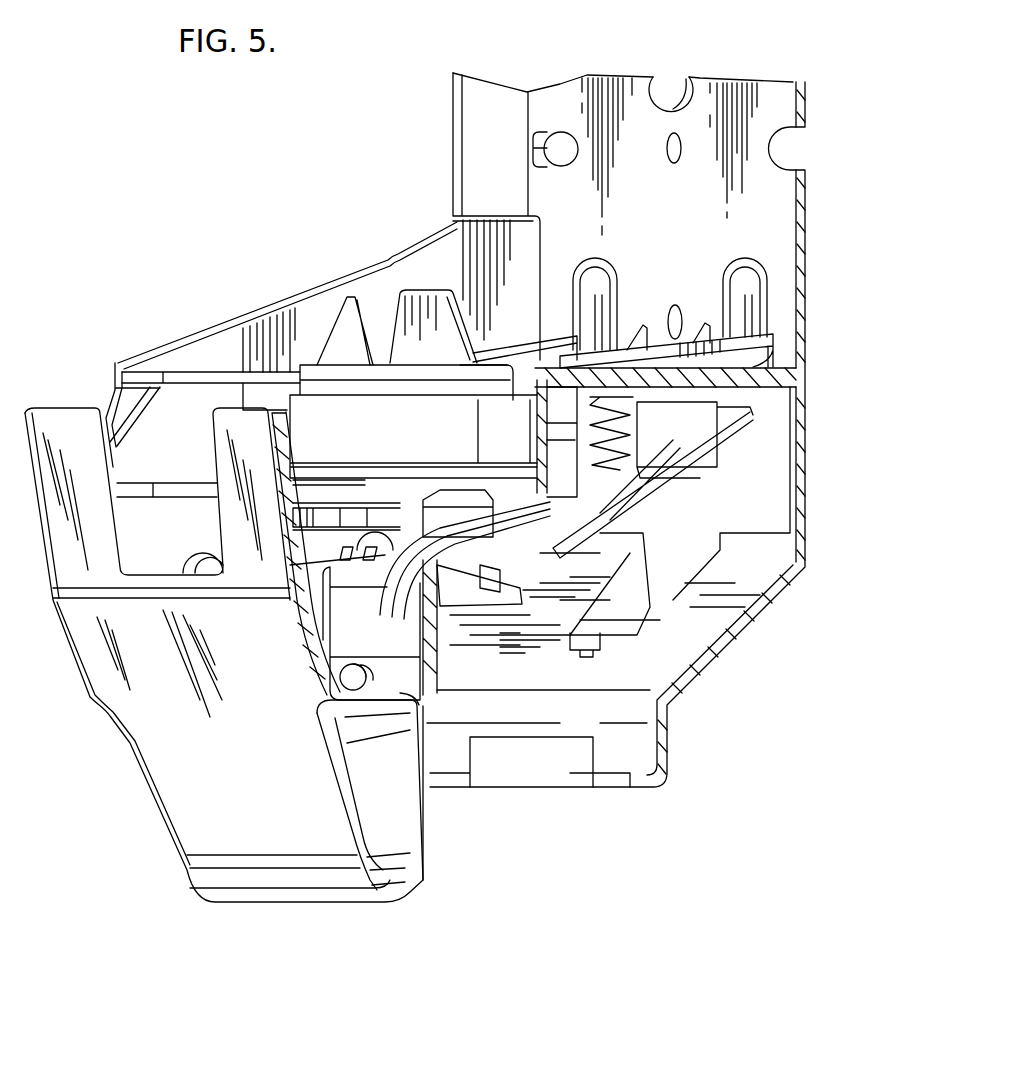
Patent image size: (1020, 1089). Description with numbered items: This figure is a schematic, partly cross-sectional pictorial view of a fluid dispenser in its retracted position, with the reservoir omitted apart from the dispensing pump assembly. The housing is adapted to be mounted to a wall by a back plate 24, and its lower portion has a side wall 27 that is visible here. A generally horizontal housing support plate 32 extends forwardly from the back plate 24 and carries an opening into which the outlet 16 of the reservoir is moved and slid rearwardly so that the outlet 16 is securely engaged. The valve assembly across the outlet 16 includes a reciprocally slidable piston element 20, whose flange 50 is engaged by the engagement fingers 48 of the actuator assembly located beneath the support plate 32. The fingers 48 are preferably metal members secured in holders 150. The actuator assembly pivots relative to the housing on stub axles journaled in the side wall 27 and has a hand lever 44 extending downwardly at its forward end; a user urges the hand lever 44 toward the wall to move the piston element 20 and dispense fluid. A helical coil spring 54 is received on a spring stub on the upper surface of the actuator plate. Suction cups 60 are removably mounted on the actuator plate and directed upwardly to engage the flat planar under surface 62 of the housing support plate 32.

The outlet 16 is at (434, 441).
The piston element 20 is at (317, 480).
The back plate 24 is at (783, 227).
The side wall 27 is at (280, 308).
The housing support plate 32 is at (773, 350).
The hand lever 44 is at (167, 753).
The engagement fingers 48 is at (410, 510).
The flange 50 is at (293, 570).
The helical coil spring 54 is at (627, 362).
The suction cup 60 is at (700, 407).
The under surface 62 is at (770, 390).
The holder 150 is at (390, 553).